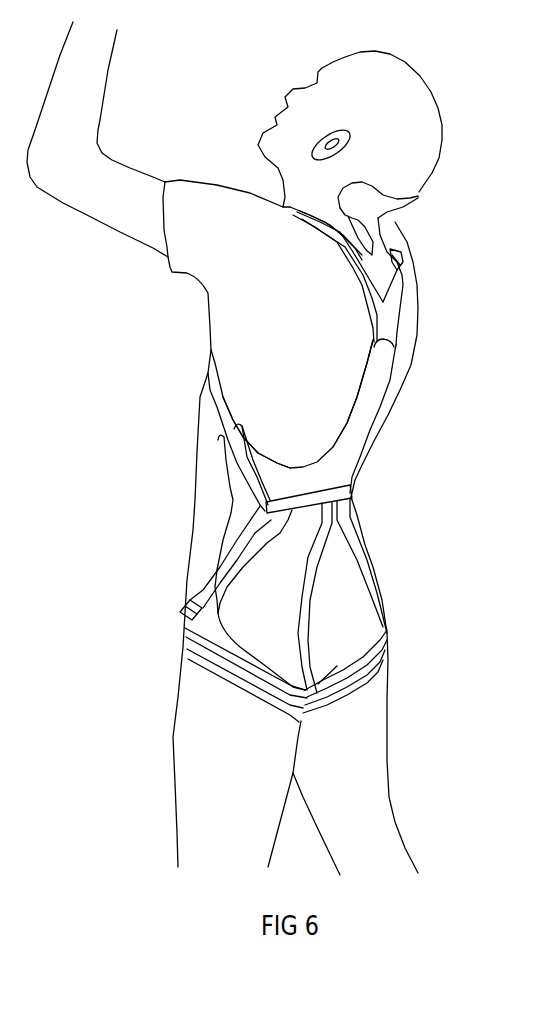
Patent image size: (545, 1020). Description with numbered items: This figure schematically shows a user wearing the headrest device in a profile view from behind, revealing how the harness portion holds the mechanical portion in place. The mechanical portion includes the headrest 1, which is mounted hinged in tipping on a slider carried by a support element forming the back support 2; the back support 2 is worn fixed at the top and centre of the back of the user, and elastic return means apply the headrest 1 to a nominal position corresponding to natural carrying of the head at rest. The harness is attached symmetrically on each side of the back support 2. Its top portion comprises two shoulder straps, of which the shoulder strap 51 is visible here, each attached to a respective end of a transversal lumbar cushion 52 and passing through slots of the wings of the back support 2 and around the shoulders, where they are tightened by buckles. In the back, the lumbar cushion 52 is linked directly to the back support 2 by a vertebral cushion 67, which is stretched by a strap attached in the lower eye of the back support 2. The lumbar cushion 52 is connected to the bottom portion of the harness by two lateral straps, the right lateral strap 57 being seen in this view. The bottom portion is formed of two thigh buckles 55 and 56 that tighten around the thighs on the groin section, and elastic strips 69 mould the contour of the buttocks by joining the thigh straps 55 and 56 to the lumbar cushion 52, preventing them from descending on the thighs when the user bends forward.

The headrest 1 is at (390, 206).
The back support 2 is at (383, 268).
The shoulder strap 51 is at (222, 408).
The lumbar cushion 52 is at (332, 498).
The thigh buckle 55 is at (357, 676).
The thigh buckle 56 is at (235, 667).
The right lateral strap 57 is at (222, 543).
The vertebral cushion 67 is at (383, 357).
The elastic strip 69 is at (312, 580).